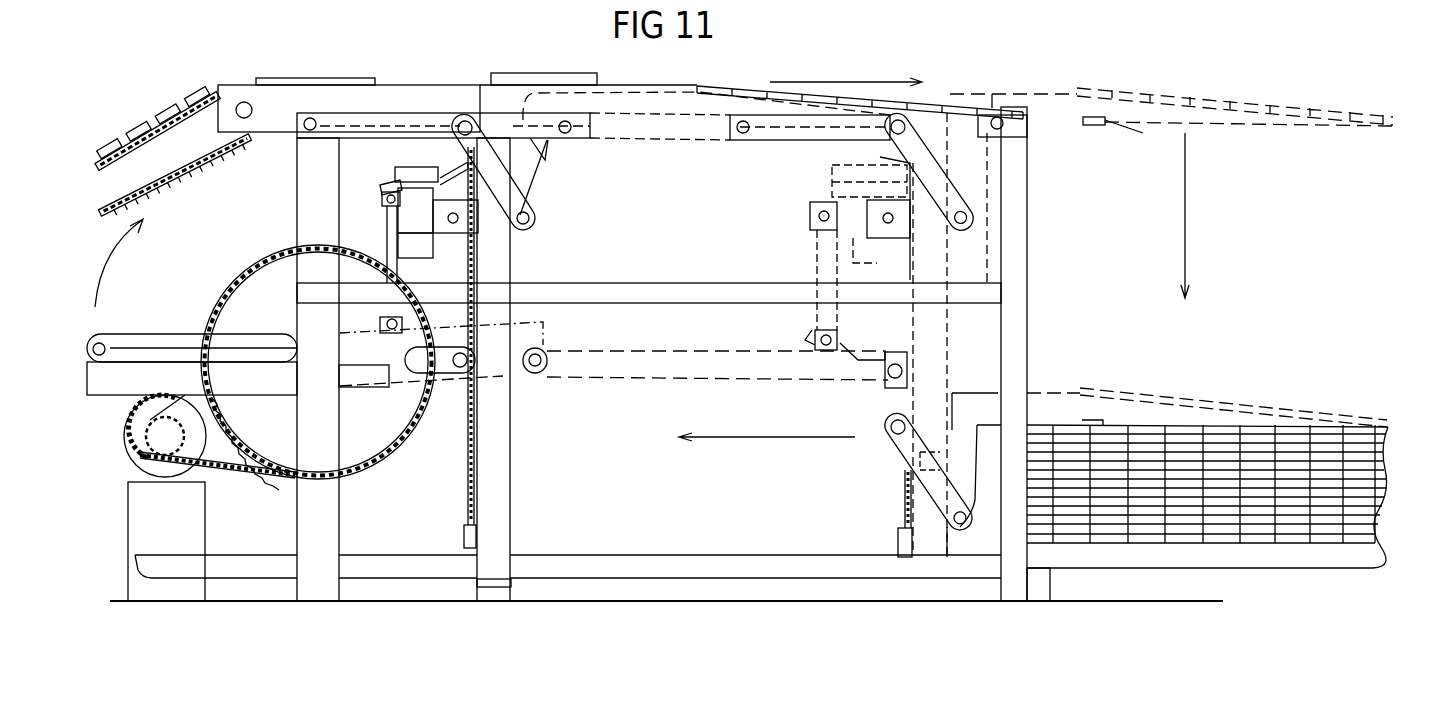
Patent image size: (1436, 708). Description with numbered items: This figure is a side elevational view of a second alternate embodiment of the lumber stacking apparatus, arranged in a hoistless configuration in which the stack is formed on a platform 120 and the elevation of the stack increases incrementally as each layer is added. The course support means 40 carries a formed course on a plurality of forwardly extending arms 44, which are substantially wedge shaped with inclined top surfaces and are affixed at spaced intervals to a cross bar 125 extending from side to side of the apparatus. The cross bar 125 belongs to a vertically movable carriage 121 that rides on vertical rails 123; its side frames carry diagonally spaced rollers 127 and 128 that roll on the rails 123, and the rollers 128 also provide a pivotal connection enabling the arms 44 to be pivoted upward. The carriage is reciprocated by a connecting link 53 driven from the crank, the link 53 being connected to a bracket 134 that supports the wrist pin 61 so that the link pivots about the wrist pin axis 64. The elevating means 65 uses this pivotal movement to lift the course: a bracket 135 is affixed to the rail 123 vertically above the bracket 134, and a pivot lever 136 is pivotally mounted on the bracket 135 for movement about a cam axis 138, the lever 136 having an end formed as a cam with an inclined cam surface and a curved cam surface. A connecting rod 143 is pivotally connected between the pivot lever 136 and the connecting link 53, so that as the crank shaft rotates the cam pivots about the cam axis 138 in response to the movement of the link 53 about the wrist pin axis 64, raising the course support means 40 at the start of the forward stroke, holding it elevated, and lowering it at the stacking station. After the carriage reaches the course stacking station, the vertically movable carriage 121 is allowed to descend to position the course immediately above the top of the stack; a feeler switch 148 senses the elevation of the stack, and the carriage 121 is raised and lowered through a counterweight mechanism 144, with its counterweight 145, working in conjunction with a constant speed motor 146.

The course support means 40 is at (752, 80).
The forwardly extending arms 44 is at (777, 110).
The connecting link 53 is at (246, 358).
The wrist pin 61 is at (466, 356).
The wrist pin axis 64 is at (457, 360).
The elevating means 65 is at (393, 186).
The platform 120 is at (1170, 560).
The vertically movable carriage 121 is at (544, 155).
The vertical rails 123 is at (502, 443).
The cross bar 125 is at (543, 170).
The roller 127 is at (530, 220).
The roller 128 is at (463, 118).
The bracket 134 is at (453, 378).
The bracket 135 is at (462, 240).
The pivot lever 136 is at (374, 206).
The cam axis 138 is at (458, 223).
The connecting rod 143 is at (395, 240).
The counterweight mechanism 144 is at (456, 481).
The counterweight 145 is at (465, 540).
The constant speed motor 146 is at (430, 167).
The feeler switch 148 is at (1098, 126).